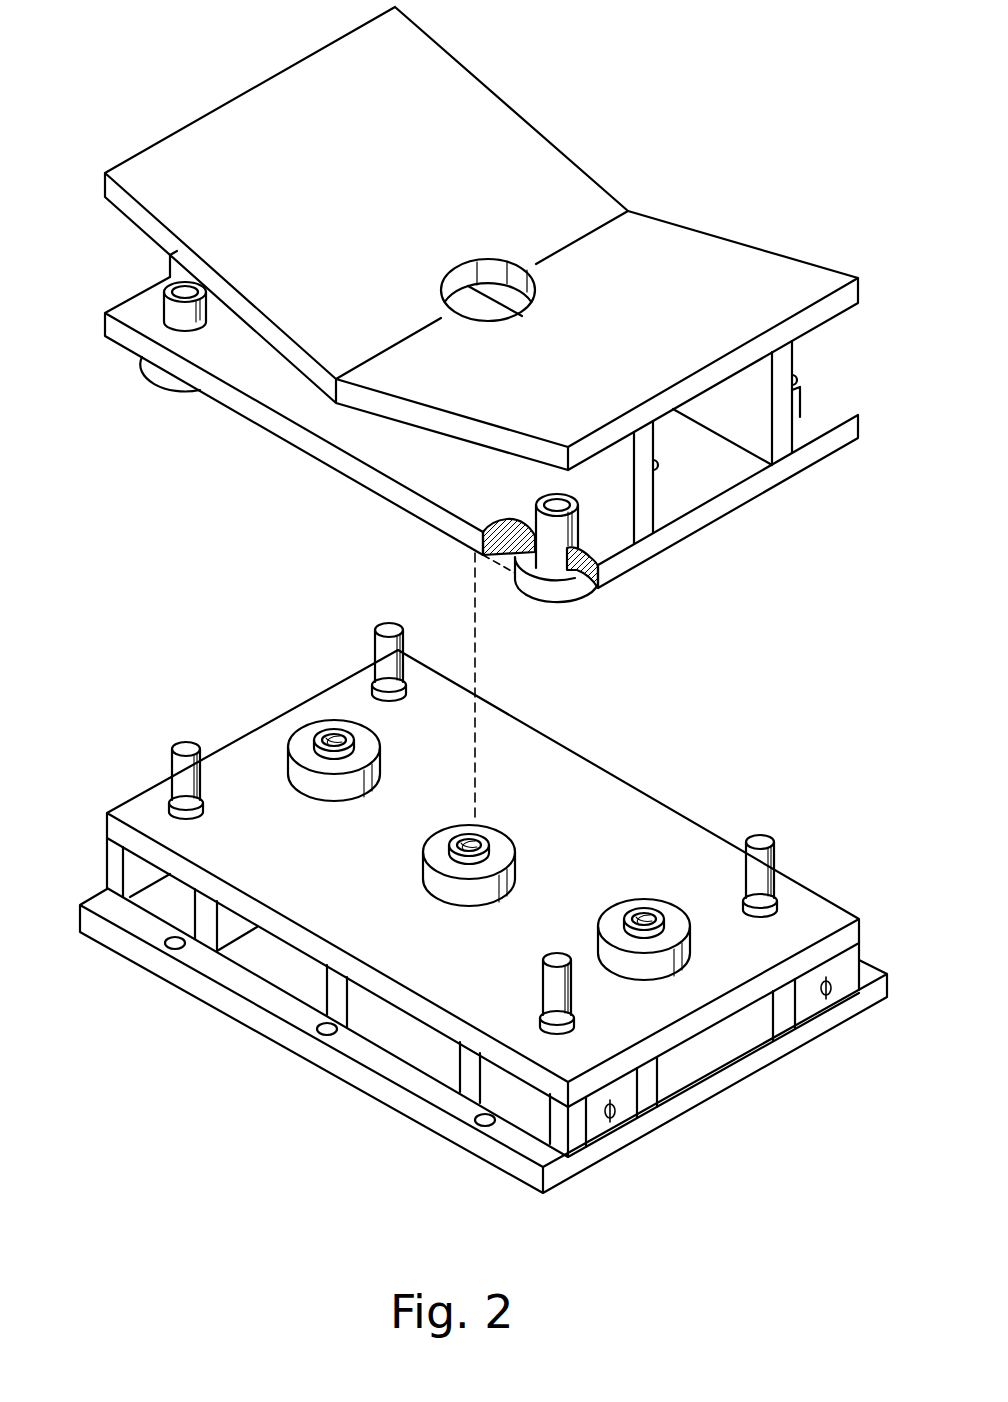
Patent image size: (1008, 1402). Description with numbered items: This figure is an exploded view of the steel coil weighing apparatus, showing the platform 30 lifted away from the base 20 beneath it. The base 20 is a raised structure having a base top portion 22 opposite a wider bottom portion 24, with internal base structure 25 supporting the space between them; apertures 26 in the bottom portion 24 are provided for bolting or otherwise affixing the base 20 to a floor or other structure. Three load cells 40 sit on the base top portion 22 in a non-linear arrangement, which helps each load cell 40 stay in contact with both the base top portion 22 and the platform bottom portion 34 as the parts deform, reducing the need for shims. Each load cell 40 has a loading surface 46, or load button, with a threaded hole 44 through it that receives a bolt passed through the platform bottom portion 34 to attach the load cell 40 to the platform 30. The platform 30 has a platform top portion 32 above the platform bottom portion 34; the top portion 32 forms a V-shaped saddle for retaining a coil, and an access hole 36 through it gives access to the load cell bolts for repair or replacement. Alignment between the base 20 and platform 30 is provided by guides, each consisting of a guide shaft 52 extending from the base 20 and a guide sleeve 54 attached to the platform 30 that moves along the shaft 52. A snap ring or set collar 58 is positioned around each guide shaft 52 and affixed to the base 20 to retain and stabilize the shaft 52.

The base 20 is at (240, 694).
The top portion 22 is at (815, 908).
The bottom portion 24 is at (833, 1028).
The internal base structure 25 is at (783, 1002).
The apertures 26 is at (320, 1034).
The platform 30 is at (772, 506).
The platform top portion 32 is at (697, 230).
The platform bottom portion 34 is at (705, 536).
The access hole 36 is at (445, 278).
The load cell 40 is at (330, 787).
The threaded hole 44 is at (348, 738).
The loading surface 46 is at (318, 757).
The guide shaft 52 is at (382, 648).
The guide sleeve 54 is at (187, 315).
The set collar 58 is at (402, 690).